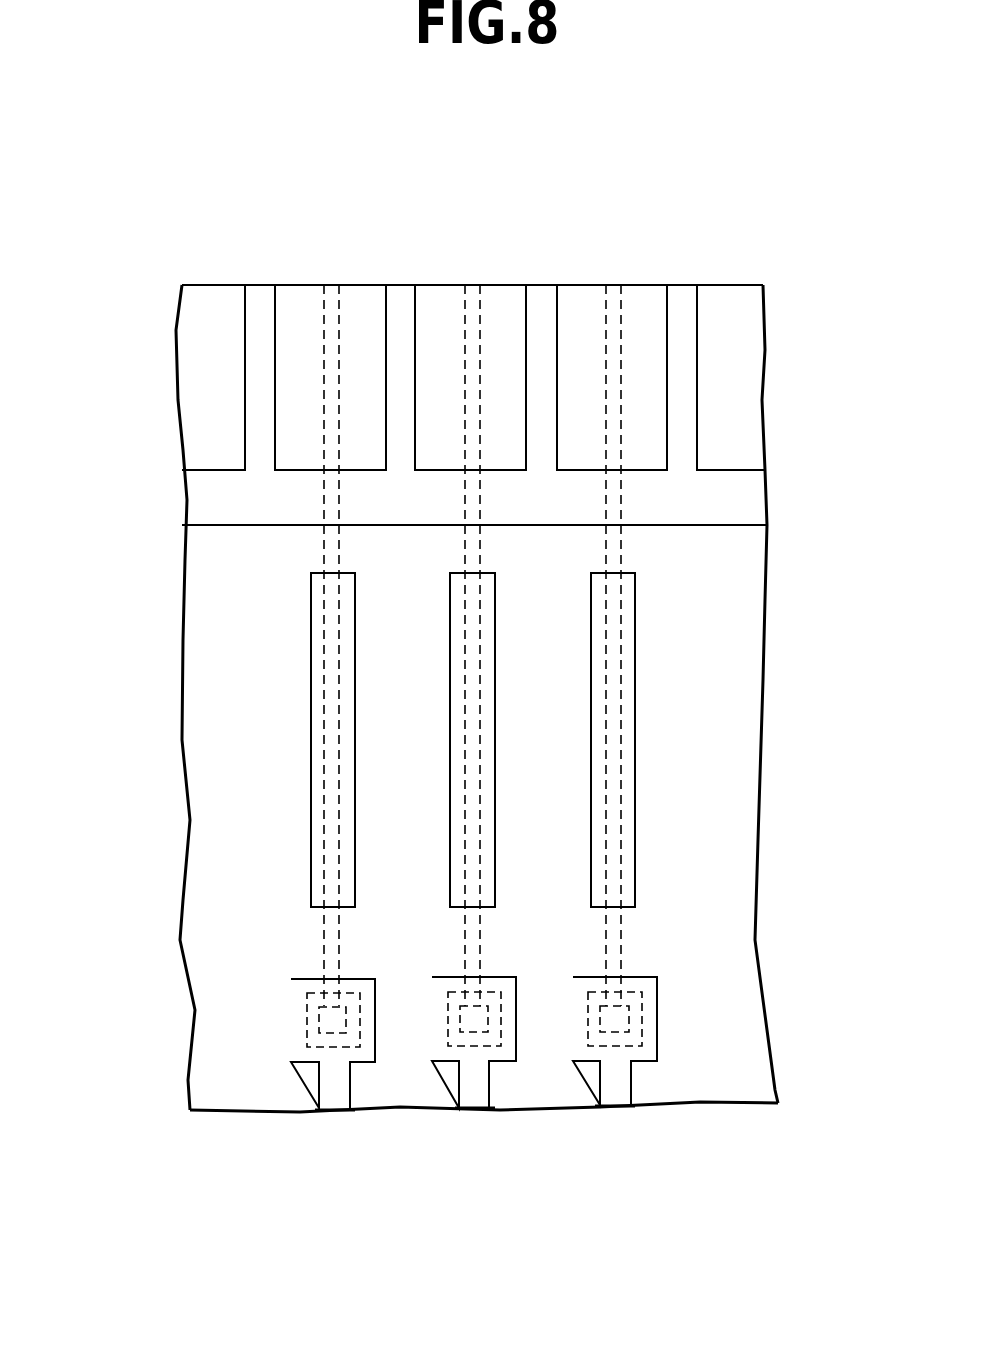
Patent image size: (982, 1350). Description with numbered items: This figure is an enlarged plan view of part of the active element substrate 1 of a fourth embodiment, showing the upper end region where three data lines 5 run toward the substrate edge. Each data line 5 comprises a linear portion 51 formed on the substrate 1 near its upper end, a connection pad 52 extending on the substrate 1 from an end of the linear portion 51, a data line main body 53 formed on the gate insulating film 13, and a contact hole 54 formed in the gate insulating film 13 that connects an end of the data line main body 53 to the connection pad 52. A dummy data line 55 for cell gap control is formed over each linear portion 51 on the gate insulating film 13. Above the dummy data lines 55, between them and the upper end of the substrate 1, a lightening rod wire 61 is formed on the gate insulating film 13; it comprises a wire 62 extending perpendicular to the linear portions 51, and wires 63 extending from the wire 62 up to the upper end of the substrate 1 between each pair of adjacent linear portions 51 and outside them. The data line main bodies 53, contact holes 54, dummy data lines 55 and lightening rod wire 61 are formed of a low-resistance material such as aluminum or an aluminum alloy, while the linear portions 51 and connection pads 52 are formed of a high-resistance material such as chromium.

The active element substrate 1 is at (722, 283).
The gate insulating film 13 is at (738, 358).
The wires 63 is at (398, 290).
The lightening rod wire 61 is at (765, 497).
The wire 62 is at (217, 497).
The linear portion 51 is at (311, 632).
The dummy data line 55 is at (311, 770).
The connection pad 52 is at (291, 1010).
The contact hole 54 is at (305, 1027).
The data line main body 53 is at (325, 1082).
The data line 5 is at (337, 1117).